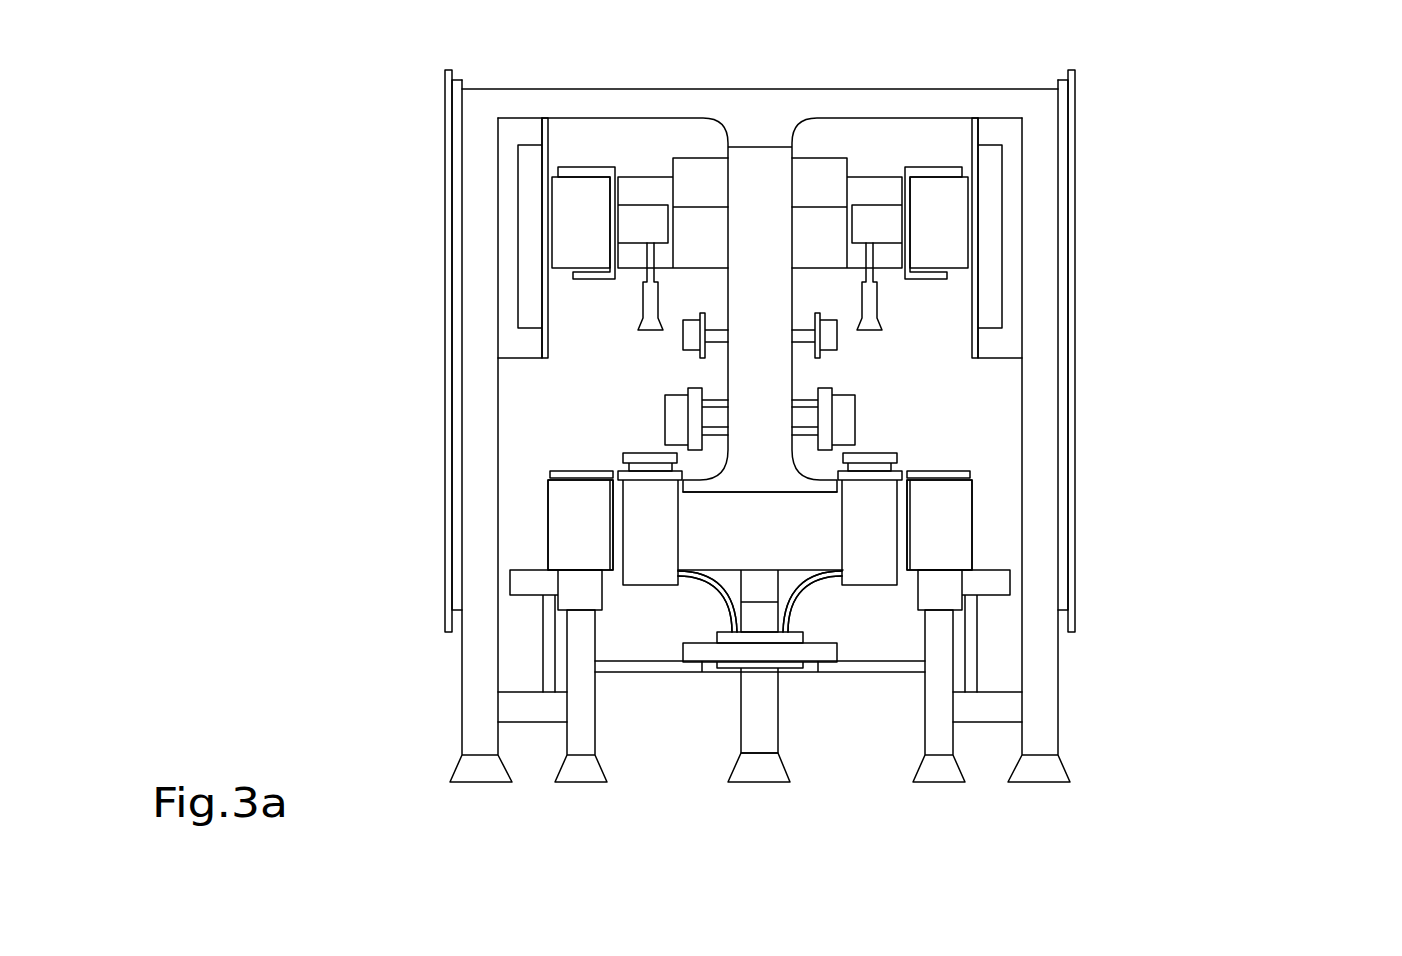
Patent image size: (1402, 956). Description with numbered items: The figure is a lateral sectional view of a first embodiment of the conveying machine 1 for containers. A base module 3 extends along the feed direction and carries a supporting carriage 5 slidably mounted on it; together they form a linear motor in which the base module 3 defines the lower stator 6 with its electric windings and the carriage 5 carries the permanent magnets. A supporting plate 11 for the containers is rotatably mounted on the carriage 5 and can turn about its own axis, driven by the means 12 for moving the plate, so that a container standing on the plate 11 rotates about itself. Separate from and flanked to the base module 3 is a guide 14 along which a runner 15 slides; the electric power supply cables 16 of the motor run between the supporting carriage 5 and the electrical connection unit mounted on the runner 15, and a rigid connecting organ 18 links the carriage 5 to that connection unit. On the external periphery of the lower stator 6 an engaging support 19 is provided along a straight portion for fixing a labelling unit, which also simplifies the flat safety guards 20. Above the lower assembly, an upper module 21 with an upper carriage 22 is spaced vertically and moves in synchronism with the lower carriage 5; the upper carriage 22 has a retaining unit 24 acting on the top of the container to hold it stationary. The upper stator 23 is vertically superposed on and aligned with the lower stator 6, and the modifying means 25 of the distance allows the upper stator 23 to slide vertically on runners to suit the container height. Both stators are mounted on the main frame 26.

The conveying machine 1 is at (1290, 159).
The base module 3 is at (536, 505).
The supporting carriage 5 is at (565, 472).
The stator 6 is at (573, 545).
The supporting plate 11 is at (637, 457).
The means for moving the plate 12 is at (636, 550).
The guide 14 is at (776, 656).
The runner 15 is at (752, 638).
The electric power supply cables 16 is at (711, 614).
The rigid connecting organ 18 is at (684, 596).
The engaging support 19 is at (530, 585).
The safety guards 20 is at (447, 72).
The upper module 21 is at (536, 245).
The upper carriage 22 is at (615, 167).
The upper stator 23 is at (573, 218).
The retaining unit 24 is at (648, 310).
The modifying means of the distance 25 is at (546, 130).
The main frame 26 is at (477, 324).